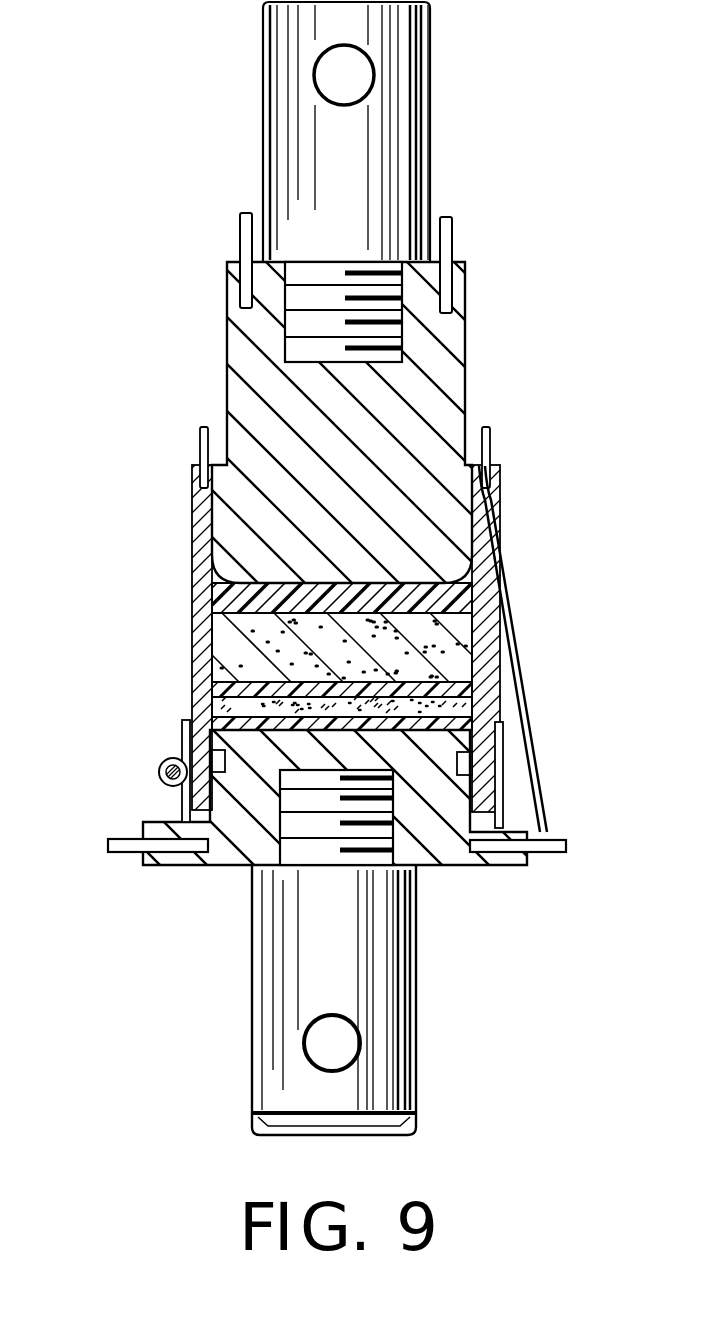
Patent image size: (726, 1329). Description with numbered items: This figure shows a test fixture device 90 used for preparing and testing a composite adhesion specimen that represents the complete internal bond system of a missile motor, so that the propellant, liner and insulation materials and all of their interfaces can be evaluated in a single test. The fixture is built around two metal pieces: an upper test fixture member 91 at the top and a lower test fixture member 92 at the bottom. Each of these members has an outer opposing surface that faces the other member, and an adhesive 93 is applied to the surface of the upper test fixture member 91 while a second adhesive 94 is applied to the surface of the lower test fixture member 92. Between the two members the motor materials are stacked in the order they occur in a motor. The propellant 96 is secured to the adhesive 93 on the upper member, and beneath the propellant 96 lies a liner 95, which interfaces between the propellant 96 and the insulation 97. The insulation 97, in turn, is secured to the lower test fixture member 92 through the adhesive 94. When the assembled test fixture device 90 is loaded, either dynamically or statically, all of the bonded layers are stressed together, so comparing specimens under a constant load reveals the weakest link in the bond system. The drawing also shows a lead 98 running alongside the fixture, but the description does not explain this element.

The test fixture device 90 is at (452, 90).
The upper test fixture member 91 is at (450, 393).
The lower test fixture member 92 is at (512, 868).
The adhesive 93 is at (253, 595).
The adhesive 94 is at (159, 763).
The liner 95 is at (237, 688).
The propellant 96 is at (243, 660).
The insulation 97 is at (462, 747).
The lead wire 98 is at (523, 690).